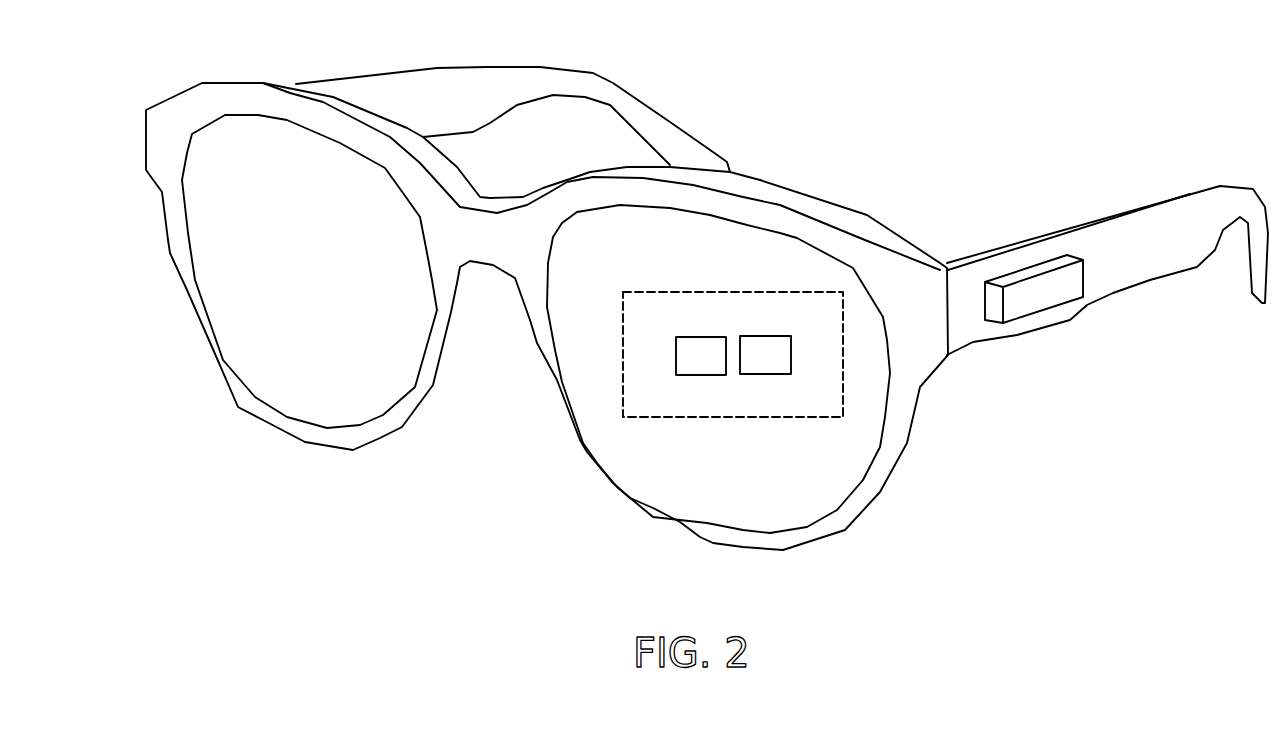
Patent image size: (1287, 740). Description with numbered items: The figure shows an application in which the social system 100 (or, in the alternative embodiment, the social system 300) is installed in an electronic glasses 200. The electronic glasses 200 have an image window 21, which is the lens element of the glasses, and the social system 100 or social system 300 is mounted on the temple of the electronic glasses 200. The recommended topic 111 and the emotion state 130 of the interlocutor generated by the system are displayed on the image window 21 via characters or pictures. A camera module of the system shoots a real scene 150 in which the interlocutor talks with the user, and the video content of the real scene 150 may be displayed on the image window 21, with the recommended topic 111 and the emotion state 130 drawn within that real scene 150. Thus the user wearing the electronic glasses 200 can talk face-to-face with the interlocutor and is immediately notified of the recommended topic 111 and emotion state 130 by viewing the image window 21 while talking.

The image window 21 is at (865, 428).
The real scene 150 is at (634, 373).
The recommended topic 111 is at (718, 364).
The emotion state 130 is at (783, 363).
The electronic glasses 200 is at (1187, 218).
The social system 100 is at (1052, 321).
The social system 300 is at (1043, 293).